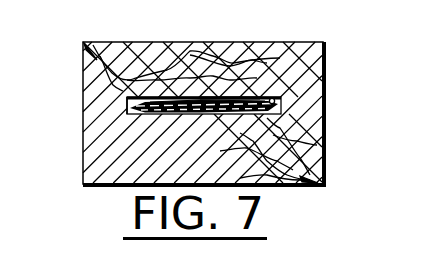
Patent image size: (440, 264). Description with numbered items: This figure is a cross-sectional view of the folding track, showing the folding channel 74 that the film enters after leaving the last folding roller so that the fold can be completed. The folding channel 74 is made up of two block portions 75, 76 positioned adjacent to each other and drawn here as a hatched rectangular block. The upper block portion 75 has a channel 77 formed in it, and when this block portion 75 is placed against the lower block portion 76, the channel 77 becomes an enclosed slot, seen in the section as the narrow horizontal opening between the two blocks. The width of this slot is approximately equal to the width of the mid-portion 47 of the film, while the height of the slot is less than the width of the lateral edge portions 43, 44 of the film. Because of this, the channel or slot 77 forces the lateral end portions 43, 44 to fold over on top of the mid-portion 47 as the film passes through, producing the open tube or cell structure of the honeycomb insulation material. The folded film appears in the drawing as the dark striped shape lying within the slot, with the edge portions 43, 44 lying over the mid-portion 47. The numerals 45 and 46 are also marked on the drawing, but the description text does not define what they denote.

The folding channel 74 is at (333, 42).
The block portion 75 is at (327, 72).
The block portion 76 is at (327, 156).
The groove 45 is at (330, 93).
The groove end 46 is at (123, 89).
The mid-portion 47 is at (327, 134).
The lateral edge portion 44 is at (189, 96).
The lateral edge portion 43 is at (232, 96).
The channel 77 is at (273, 98).